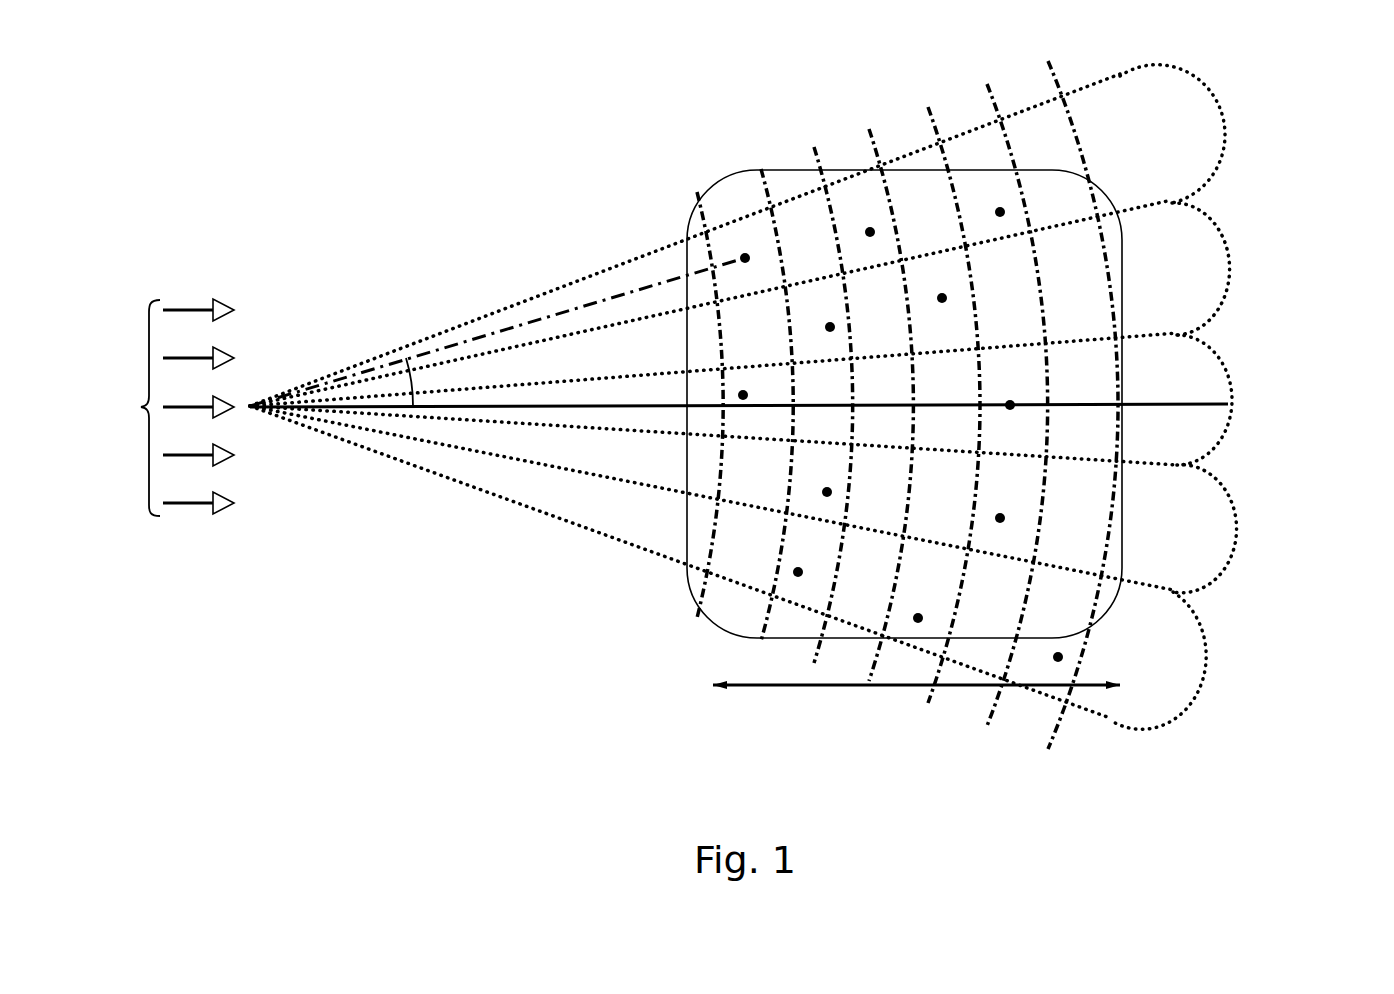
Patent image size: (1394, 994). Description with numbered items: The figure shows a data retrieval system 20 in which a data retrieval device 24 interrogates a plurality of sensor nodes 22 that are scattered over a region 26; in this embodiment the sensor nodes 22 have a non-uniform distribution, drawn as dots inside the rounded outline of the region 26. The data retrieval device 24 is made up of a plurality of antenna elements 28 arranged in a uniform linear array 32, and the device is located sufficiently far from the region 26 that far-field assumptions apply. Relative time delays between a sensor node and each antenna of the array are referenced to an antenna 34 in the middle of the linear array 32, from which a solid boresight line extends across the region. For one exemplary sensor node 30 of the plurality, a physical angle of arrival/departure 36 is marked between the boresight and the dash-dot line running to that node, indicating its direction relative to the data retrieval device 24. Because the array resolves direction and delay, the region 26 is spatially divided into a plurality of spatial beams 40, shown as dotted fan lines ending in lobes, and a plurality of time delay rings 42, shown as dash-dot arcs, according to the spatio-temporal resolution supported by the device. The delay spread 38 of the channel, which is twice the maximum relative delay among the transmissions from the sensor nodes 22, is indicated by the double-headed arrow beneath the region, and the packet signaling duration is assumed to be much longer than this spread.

The data retrieval system 20 is at (370, 228).
The sensor nodes 22 is at (745, 386).
The data retrieval device 24 is at (271, 426).
The region 26 is at (687, 483).
The antenna elements 28 is at (233, 349).
The sensor node 30 is at (743, 256).
The uniform linear array 32 is at (128, 408).
The antenna 34 is at (236, 406).
The physical angle of arrival/departure 36 is at (412, 388).
The delay spread 38 is at (916, 710).
The spatial beams 40 is at (1197, 337).
The time delay rings 42 is at (975, 490).